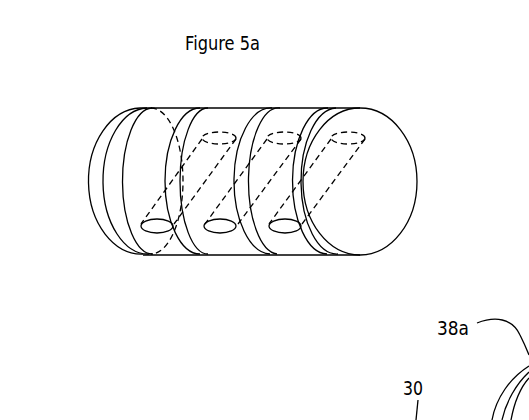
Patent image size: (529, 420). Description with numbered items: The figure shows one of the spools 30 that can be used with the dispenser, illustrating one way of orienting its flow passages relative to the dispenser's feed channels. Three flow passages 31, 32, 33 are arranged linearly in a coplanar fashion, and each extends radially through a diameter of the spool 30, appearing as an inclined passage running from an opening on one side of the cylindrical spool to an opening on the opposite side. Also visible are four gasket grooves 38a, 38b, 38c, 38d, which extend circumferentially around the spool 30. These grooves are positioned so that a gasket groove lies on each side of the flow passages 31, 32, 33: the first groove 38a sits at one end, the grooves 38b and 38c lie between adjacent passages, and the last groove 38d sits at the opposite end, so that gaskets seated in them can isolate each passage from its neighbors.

The spool 30 is at (392, 184).
The flow passage 31 is at (155, 226).
The flow passage 32 is at (287, 228).
The flow passage 33 is at (220, 226).
The gasket groove 38a is at (139, 111).
The gasket groove 38b is at (191, 253).
The gasket groove 38c is at (256, 253).
The gasket groove 38d is at (330, 109).